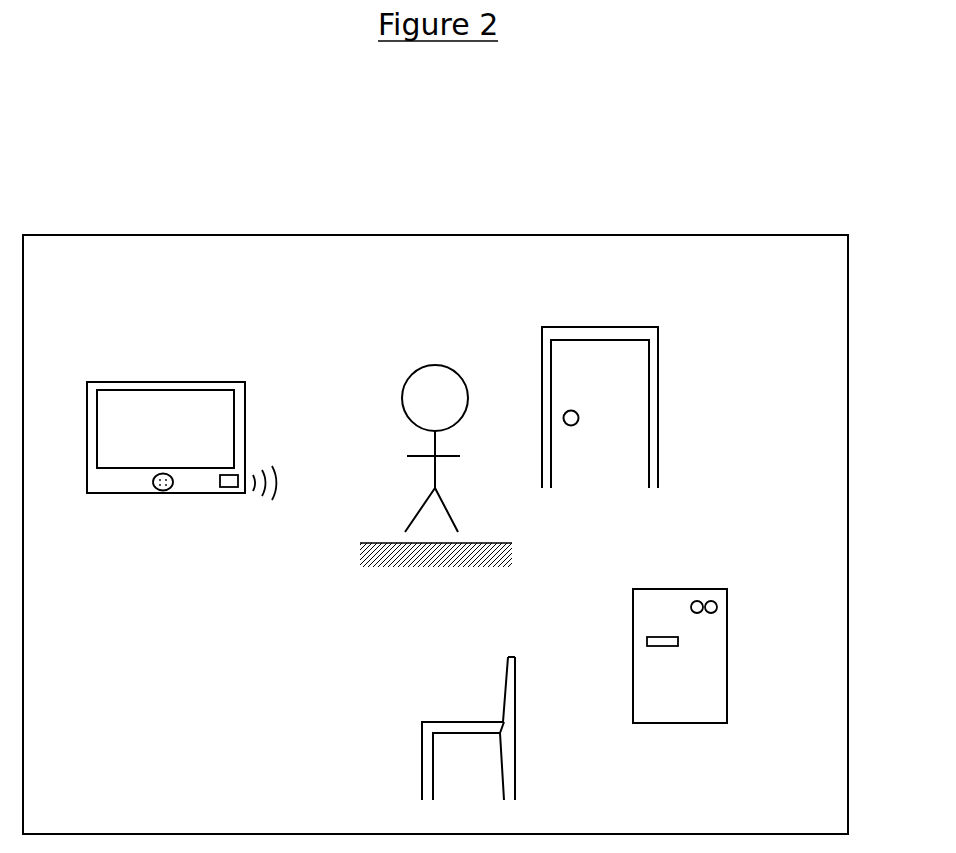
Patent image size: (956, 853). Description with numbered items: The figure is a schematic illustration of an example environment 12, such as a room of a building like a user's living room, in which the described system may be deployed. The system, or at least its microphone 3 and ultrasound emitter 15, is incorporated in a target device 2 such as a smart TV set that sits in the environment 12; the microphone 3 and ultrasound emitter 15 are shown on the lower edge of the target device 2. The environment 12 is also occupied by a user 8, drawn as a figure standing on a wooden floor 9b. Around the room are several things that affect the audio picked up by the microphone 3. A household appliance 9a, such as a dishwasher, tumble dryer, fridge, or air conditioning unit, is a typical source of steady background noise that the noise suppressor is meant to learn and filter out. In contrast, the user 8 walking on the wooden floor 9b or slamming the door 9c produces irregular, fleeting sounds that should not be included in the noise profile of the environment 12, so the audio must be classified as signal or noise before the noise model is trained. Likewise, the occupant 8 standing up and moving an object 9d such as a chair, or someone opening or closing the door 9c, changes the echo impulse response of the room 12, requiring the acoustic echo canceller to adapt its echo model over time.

The environment 12 is at (173, 235).
The target device 2 is at (118, 382).
The microphone 3 is at (168, 490).
The ultrasound emitter 15 is at (229, 487).
The user 8 is at (415, 365).
The wooden floor 9b is at (512, 543).
The door 9c is at (658, 412).
The household appliance 9a is at (727, 654).
The object 9d is at (515, 762).